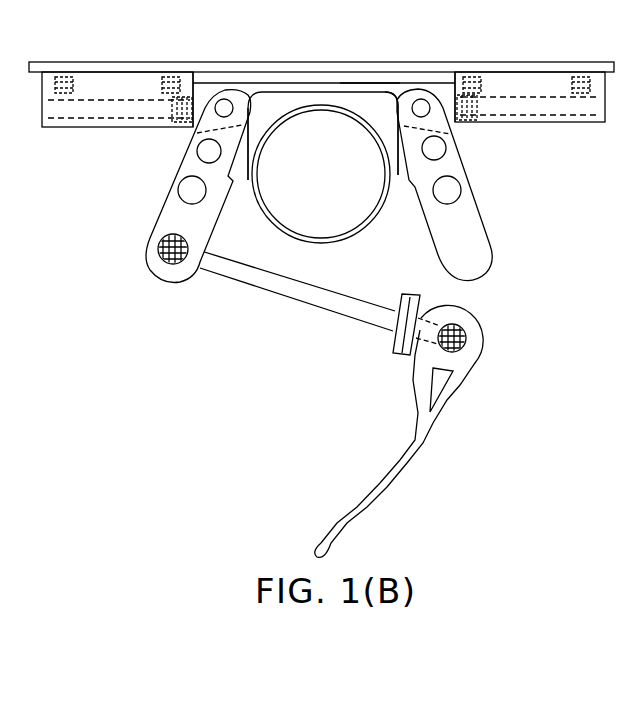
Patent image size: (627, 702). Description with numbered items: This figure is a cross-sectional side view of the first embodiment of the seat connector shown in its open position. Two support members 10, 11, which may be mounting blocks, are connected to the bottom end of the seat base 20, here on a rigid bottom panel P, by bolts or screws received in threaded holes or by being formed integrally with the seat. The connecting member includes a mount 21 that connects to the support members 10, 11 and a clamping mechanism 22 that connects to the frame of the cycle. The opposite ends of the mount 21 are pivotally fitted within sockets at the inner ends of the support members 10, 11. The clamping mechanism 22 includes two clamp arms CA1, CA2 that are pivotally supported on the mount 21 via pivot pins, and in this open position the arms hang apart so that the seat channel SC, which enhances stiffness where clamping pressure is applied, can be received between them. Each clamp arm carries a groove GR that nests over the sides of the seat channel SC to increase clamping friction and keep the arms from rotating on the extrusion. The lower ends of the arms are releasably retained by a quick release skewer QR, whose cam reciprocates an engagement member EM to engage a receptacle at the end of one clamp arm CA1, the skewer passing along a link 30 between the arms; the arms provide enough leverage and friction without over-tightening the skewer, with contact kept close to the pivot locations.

The support member 10 is at (100, 122).
The support member 11 is at (542, 118).
The seat base 20 is at (323, 87).
The mount 21 is at (393, 98).
The clamping mechanism 22 is at (480, 303).
The link rod 30 is at (300, 238).
The seat channel SC is at (268, 120).
The bottom panel P is at (363, 68).
The groove GR is at (235, 175).
The clamp arm CA1 is at (153, 268).
The clamp arm CA2 is at (492, 251).
The engagement member EM is at (390, 345).
The quick release skewer QR is at (458, 303).